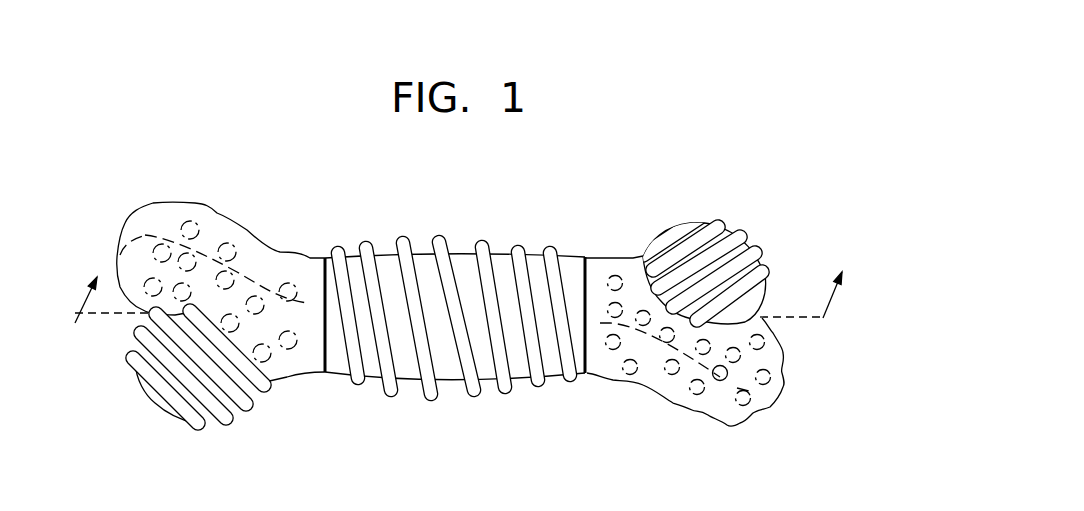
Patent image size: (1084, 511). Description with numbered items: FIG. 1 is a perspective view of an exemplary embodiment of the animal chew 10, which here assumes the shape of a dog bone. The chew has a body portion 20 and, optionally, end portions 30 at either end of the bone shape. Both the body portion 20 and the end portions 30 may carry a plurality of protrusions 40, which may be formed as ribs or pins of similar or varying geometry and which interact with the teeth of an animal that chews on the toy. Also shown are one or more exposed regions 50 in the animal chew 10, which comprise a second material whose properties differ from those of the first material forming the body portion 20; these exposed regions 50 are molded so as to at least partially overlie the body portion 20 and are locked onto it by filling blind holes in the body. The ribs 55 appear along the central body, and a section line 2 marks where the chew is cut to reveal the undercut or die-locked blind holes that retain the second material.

The animal chew 10 is at (330, 183).
The body portion 20 is at (587, 372).
The end portions 30 is at (708, 378).
The protrusions 40 is at (720, 220).
The exposed regions 50 is at (397, 343).
The ribs on shaft 55 is at (475, 385).
The section line 2- 2 is at (461, 321).